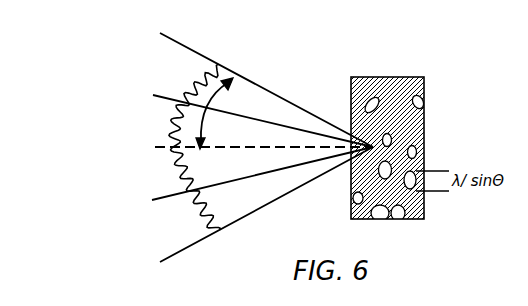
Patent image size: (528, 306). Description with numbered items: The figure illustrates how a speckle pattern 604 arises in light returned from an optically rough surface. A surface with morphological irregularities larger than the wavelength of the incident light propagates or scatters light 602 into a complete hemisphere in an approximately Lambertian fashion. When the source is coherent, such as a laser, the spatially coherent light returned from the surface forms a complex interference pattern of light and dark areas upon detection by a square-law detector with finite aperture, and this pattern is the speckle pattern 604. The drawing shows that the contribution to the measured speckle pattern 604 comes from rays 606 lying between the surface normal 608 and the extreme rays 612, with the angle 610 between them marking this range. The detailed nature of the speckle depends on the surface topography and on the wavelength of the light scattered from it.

The light 602 is at (172, 136).
The speckle pattern 604 is at (404, 78).
The rays 606 is at (226, 112).
The surface normal 608 is at (156, 147).
The angle theta 610 is at (214, 126).
The extreme rays 612 is at (252, 80).